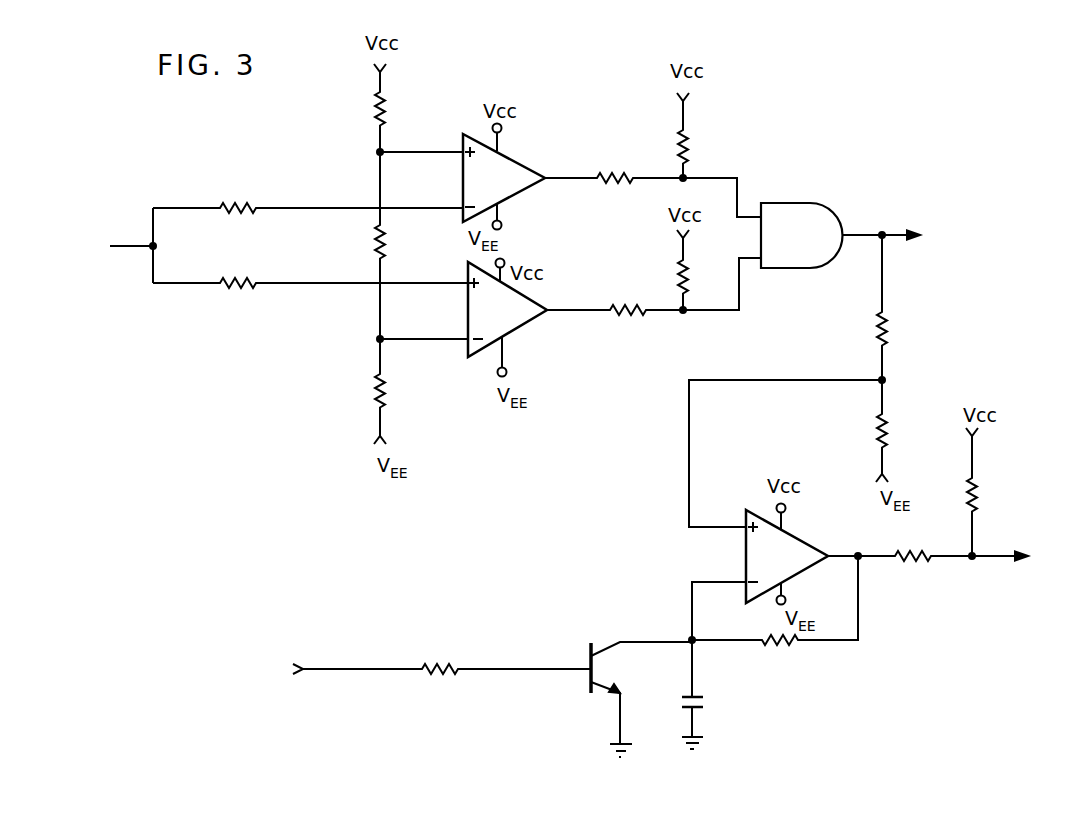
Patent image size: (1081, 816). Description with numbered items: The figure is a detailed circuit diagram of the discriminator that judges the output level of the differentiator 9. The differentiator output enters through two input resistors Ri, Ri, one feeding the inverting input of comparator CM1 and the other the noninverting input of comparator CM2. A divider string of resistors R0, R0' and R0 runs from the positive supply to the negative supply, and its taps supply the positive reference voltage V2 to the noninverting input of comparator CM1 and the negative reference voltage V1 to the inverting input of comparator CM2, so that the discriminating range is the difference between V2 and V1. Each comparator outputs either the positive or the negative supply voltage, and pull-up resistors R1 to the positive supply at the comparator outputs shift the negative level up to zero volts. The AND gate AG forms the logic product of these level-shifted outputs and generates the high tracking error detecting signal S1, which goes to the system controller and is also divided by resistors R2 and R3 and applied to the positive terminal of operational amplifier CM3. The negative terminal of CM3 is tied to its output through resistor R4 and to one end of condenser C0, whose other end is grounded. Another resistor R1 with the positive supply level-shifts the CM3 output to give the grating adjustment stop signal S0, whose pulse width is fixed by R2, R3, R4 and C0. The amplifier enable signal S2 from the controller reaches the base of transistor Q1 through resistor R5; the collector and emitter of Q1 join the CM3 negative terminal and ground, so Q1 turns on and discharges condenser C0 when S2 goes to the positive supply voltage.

The differentiator 9 is at (102, 241).
The input resistor Ri is at (310, 245).
The resistor R0 is at (395, 254).
The resistor R1 is at (801, 351).
The resistor R2 is at (897, 307).
The resistor R3 is at (896, 431).
The resistor R4 is at (775, 617).
The resistor R5 is at (447, 656).
The condenser C0 is at (706, 694).
The transistor Q1 is at (641, 699).
The comparator CM1 is at (507, 177).
The comparator CM2 is at (507, 318).
The operational amplifier CM3 is at (790, 556).
The AND gate AG is at (763, 244).
The high tracking error detecting signal S1 is at (897, 238).
The grating adjustment stop signal S0 is at (1014, 558).
The amplifier enable signal S2 is at (274, 670).
The negative reference voltage V1 is at (410, 338).
The positive reference voltage V2 is at (407, 155).